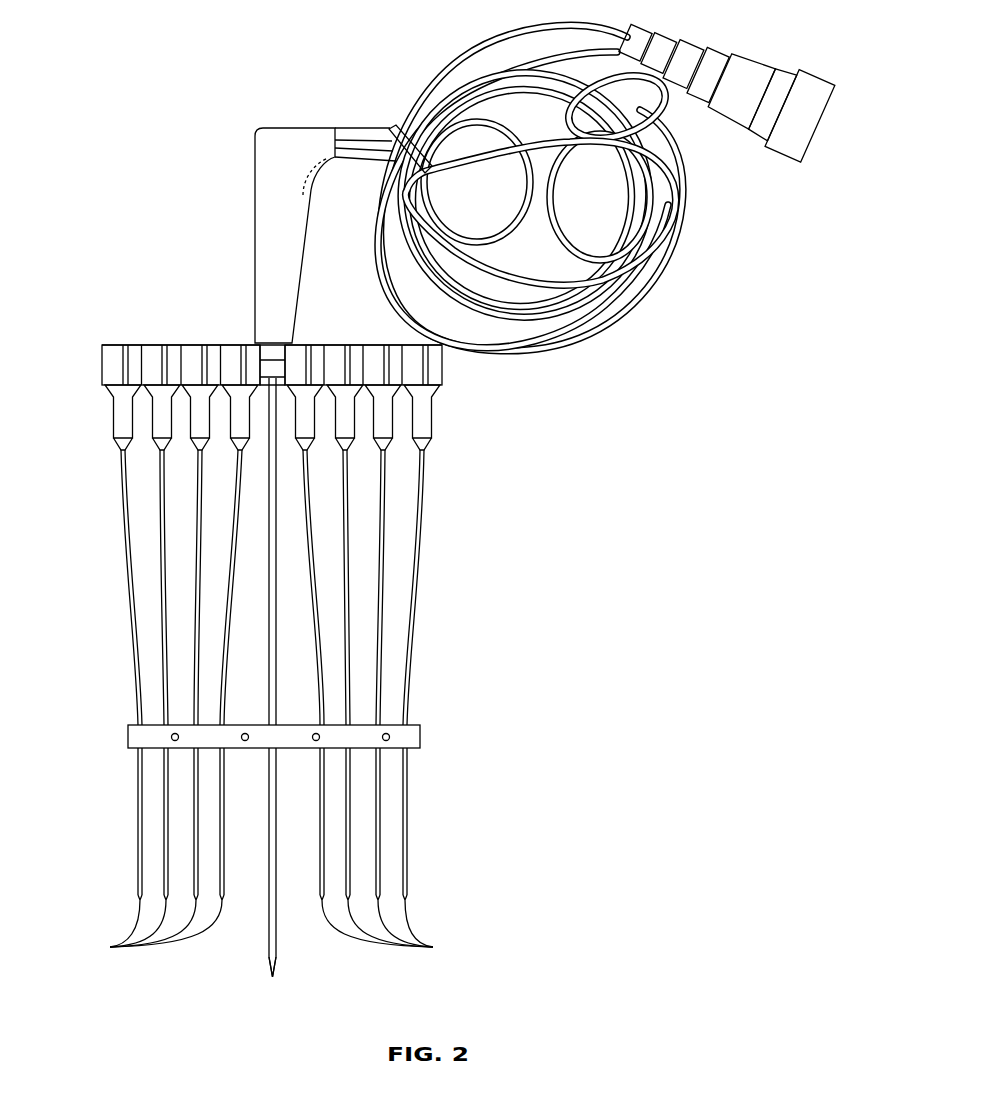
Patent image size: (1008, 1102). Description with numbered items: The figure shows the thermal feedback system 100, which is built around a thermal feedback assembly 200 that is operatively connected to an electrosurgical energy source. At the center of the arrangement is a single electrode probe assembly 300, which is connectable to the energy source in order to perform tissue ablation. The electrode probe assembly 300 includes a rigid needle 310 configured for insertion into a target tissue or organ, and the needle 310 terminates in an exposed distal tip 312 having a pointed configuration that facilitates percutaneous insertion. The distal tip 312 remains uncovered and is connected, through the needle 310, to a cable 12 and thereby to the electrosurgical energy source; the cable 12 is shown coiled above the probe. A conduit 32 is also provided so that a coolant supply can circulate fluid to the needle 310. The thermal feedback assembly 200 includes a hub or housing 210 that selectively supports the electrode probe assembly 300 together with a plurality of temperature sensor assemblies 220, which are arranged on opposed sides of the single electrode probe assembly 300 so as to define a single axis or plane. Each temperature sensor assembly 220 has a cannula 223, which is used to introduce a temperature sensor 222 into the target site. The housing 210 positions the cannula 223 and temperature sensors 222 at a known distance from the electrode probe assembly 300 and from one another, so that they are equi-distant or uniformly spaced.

The thermal feedback system 100 is at (119, 246).
The cable 12 is at (483, 44).
The conduit 32 is at (370, 127).
The electrode probe assembly 300 is at (243, 166).
The needle 310 is at (283, 692).
The distal tip 312 is at (266, 956).
The thermal feedback assembly 200 is at (96, 345).
The temperature sensor assembly 220 is at (245, 344).
The cannula 223 is at (223, 613).
The temperature sensor 222 is at (272, 927).
The housing 210 is at (424, 728).